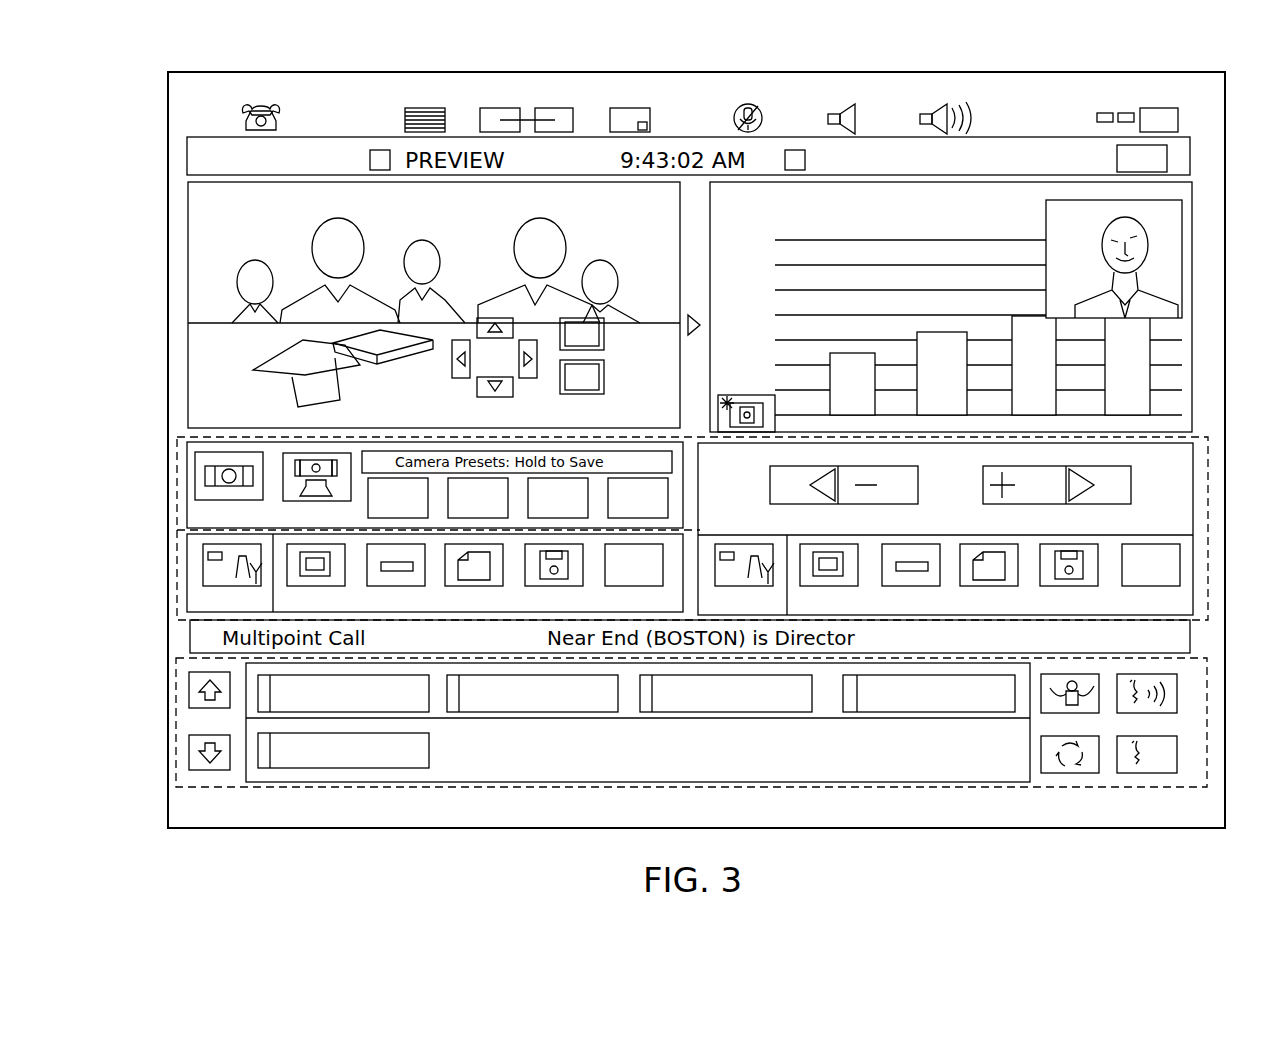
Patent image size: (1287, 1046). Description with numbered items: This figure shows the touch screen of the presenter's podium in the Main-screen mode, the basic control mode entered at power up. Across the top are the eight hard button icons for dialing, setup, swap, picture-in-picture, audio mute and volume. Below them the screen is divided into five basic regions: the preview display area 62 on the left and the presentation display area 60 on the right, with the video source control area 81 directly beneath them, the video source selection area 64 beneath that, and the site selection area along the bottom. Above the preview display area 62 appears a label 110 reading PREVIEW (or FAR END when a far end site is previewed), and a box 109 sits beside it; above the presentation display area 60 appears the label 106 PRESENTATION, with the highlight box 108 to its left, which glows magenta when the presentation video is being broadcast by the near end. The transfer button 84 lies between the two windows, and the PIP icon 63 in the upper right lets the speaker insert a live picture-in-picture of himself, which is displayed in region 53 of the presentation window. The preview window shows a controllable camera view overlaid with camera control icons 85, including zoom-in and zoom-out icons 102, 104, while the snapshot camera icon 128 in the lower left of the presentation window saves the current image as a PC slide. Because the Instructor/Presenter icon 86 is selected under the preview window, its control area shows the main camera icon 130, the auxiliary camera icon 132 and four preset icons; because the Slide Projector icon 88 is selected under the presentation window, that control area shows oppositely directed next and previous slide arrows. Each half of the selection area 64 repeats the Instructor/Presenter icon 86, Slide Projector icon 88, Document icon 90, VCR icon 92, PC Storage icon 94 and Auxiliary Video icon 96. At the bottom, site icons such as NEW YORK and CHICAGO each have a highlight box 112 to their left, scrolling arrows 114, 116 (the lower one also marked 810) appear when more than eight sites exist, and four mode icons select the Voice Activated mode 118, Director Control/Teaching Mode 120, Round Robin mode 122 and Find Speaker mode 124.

The highlight box 108 is at (790, 150).
The PRESENTATION label 106 is at (991, 149).
The PIP icon 63 is at (1167, 156).
The preview checkbox 109 is at (370, 162).
The preview label 110 is at (462, 177).
The preview display area 62 is at (202, 233).
The presentation display area 60 is at (1195, 205).
The transfer button 84 is at (693, 292).
The camera control icons 85 is at (450, 374).
The zoom-in icon 102 is at (606, 341).
The zoom-out icon 104 is at (606, 378).
The PIP region 53 is at (1114, 259).
The snapshot camera icon 128 is at (751, 392).
The main camera icon 130 is at (242, 450).
The auxiliary camera icon 132 is at (348, 440).
The video source control area 81 is at (176, 476).
The video source selection area 64 is at (187, 562).
The Instructor/Presenter icon 86 is at (488, 575).
The Slide Projector icon 88 is at (295, 587).
The VCR icon 92 is at (377, 587).
The Document icon 90 is at (455, 587).
The PC Storage icon 94 is at (535, 587).
The Auxiliary Video icon 96 is at (618, 587).
The scrolling arrow 114 is at (189, 690).
The scroll down button 810 is at (189, 750).
The scrolling arrow 116 is at (213, 772).
The highlight box 112 is at (453, 713).
The Director Control/Teaching Mode icon 120 is at (1072, 674).
The Voice Activated mode icon 118 is at (1178, 692).
The Round Robin mode icon 122 is at (1060, 774).
The Find Speaker mode icon 124 is at (1178, 752).